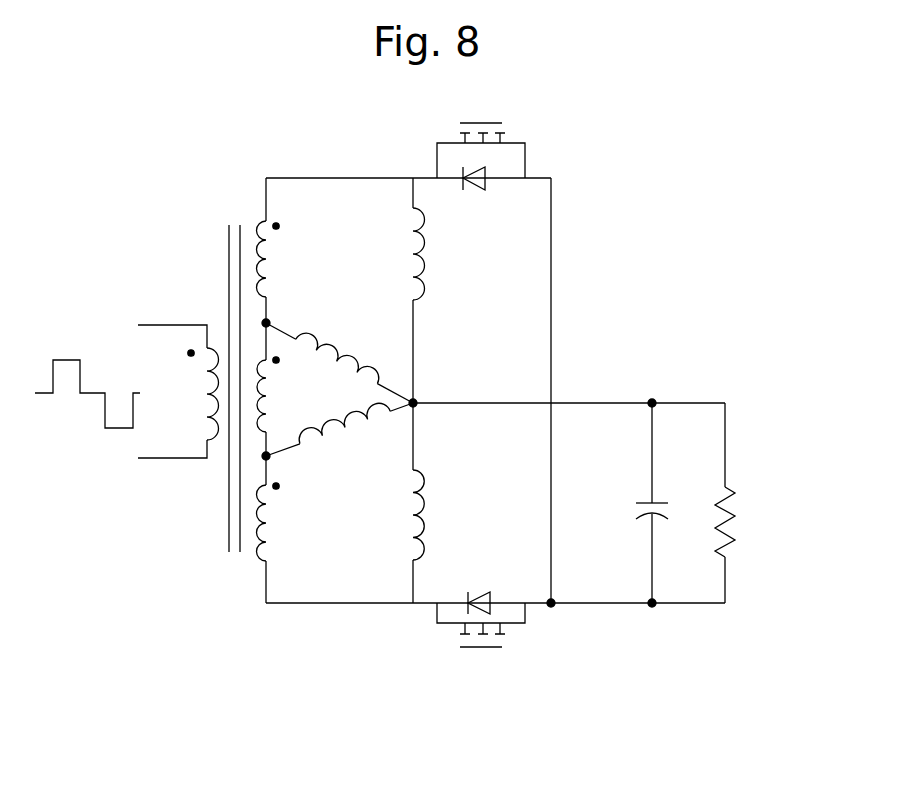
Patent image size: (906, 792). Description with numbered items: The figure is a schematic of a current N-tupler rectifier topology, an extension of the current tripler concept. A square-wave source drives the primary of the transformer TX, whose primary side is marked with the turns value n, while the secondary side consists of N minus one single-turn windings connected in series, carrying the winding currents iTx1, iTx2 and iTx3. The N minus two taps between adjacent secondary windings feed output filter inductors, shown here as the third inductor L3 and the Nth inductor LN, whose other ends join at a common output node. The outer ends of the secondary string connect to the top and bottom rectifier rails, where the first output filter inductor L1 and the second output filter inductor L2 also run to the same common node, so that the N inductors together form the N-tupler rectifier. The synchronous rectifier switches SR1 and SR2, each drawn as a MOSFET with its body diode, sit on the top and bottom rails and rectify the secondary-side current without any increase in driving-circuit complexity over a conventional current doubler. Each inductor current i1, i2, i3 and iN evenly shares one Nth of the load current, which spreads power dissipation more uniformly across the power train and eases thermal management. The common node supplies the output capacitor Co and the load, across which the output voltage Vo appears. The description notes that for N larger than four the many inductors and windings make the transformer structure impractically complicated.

The transformer TX is at (189, 388).
The primary winding turns ratio n is at (186, 394).
The first secondary winding current iTx1 is at (295, 238).
The second secondary winding current iTx2 is at (295, 357).
The third secondary winding current iTx3 is at (295, 494).
The first output filter inductor L1 is at (439, 254).
The second output filter inductor L2 is at (439, 515).
The third output filter inductor L3 is at (342, 349).
The Nth output filter inductor LN is at (337, 440).
The first inductor current i1 is at (477, 225).
The second inductor current i2 is at (477, 570).
The third inductor current i3 is at (330, 325).
The Nth inductor current iN is at (318, 452).
The first synchronous rectifier switch SR1 is at (481, 138).
The second synchronous rectifier switch SR2 is at (481, 641).
The output capacitor Co is at (639, 503).
The output voltage Vo is at (746, 503).